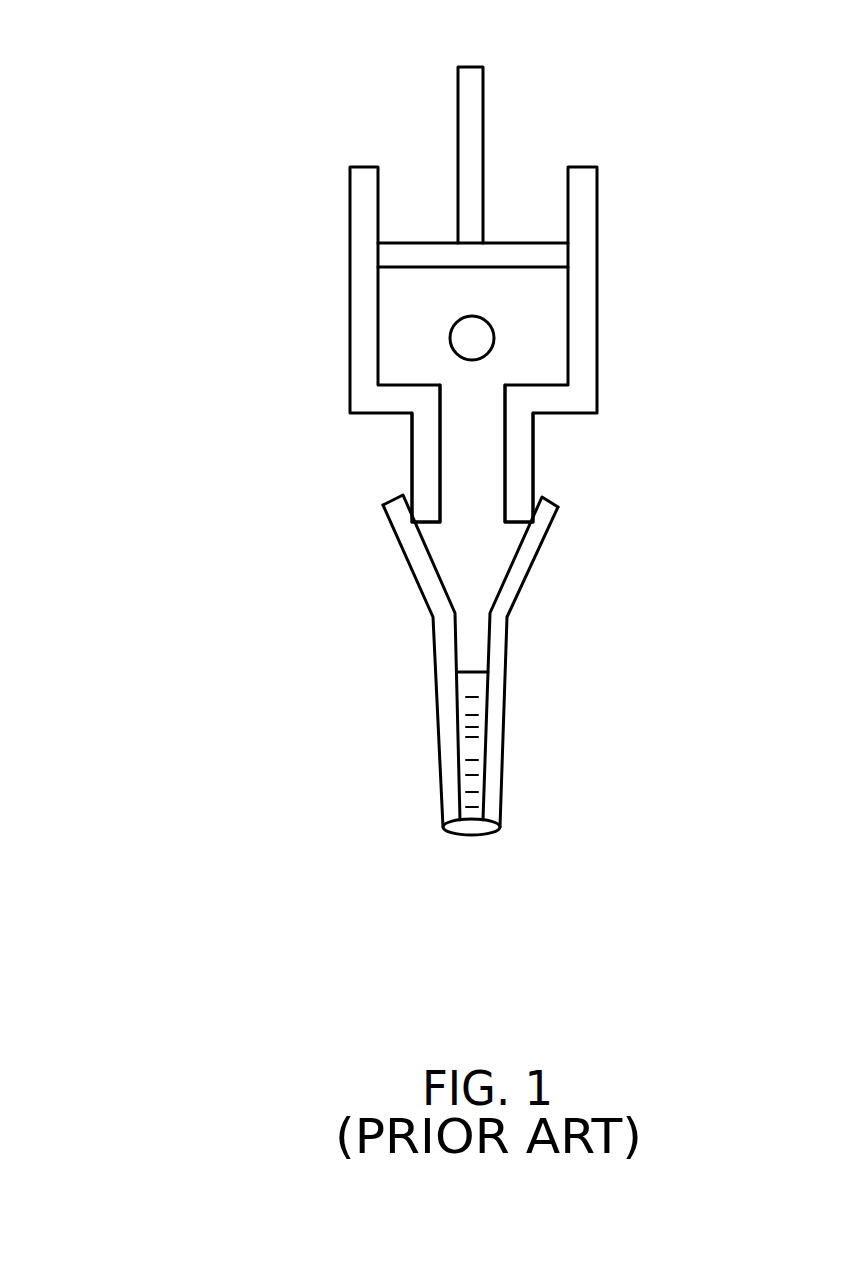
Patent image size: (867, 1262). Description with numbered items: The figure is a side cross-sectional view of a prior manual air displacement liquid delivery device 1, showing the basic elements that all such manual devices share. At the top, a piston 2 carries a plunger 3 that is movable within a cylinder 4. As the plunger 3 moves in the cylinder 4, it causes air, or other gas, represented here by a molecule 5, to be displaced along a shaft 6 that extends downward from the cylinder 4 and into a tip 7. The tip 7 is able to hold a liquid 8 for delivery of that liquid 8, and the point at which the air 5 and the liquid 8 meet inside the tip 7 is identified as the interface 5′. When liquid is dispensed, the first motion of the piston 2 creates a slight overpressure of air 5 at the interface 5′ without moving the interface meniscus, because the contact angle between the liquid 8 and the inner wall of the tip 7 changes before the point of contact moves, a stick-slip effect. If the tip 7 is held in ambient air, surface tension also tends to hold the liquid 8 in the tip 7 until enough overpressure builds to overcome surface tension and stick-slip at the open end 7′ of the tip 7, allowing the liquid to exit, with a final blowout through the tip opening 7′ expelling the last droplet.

The manual air displacement liquid delivery device 1 is at (258, 358).
The piston 2 is at (483, 92).
The plunger 3 is at (553, 255).
The cylinder 4 is at (597, 307).
The air molecule 5 is at (470, 338).
The shaft 6 is at (533, 468).
The tip 7 is at (440, 720).
The open end of the tip 7′ is at (457, 615).
The interface 5′ is at (472, 672).
The liquid 8 is at (467, 733).